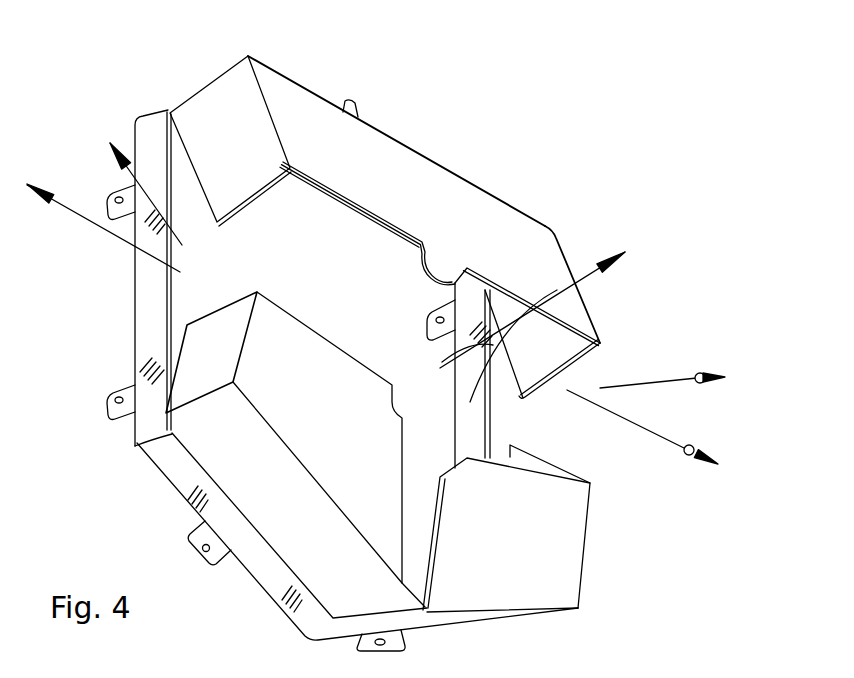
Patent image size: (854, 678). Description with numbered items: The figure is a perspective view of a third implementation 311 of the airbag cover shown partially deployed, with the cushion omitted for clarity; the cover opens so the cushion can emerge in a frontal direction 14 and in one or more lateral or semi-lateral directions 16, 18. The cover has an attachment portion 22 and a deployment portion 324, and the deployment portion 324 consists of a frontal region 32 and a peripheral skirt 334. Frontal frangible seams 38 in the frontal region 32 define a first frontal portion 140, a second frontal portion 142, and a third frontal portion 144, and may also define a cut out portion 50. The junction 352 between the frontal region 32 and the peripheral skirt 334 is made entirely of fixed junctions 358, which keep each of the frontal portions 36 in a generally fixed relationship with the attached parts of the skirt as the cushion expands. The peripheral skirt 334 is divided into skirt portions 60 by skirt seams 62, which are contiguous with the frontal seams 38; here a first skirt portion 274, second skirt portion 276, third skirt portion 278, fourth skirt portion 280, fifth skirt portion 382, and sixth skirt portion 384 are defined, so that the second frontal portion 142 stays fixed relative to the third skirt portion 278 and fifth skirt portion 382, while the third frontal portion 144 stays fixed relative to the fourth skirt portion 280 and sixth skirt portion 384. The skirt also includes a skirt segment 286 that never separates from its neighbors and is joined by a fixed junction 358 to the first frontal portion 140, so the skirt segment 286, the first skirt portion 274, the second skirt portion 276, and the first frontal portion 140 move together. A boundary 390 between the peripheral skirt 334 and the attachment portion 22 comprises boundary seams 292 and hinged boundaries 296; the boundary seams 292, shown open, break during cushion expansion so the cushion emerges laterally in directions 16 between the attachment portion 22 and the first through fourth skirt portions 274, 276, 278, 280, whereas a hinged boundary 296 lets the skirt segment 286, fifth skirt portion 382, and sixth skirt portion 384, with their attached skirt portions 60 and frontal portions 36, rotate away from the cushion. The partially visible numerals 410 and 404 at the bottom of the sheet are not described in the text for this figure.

The third implementation 311 is at (78, 70).
The attachment portion 22 is at (147, 125).
The hinged boundaries 296 is at (169, 107).
The deployment portion 324 is at (208, 88).
The junction 352 is at (272, 133).
The fixed junctions 358 is at (272, 72).
The frontal region 32 is at (418, 157).
The first frontal portion 140 is at (322, 98).
The frontal portions 36 is at (494, 200).
The skirt segment 286 is at (357, 118).
The skirt portions 60 is at (267, 183).
The cut out portion 50 is at (445, 258).
The frontal direction 14 is at (557, 285).
The second skirt portion 276 is at (580, 348).
The frontal frangible seams 38 is at (366, 214).
The boundary seams 292 is at (133, 173).
The second frontal portion 142 is at (288, 428).
The third skirt portion 278 is at (230, 367).
The skirt seams 62 is at (249, 292).
The peripheral skirt 334 is at (155, 463).
The boundary 390 is at (135, 444).
The fifth skirt portion 382 is at (181, 494).
The third frontal portion 144 is at (514, 600).
The sixth skirt portion 384 is at (449, 620).
The fourth skirt portion 280 is at (537, 465).
The first skirt portion 274 is at (195, 143).
The lateral directions 16 is at (72, 212).
The semi-lateral direction 18 is at (110, 196).
The element 410 is at (79, 671).
The element 404 is at (163, 671).